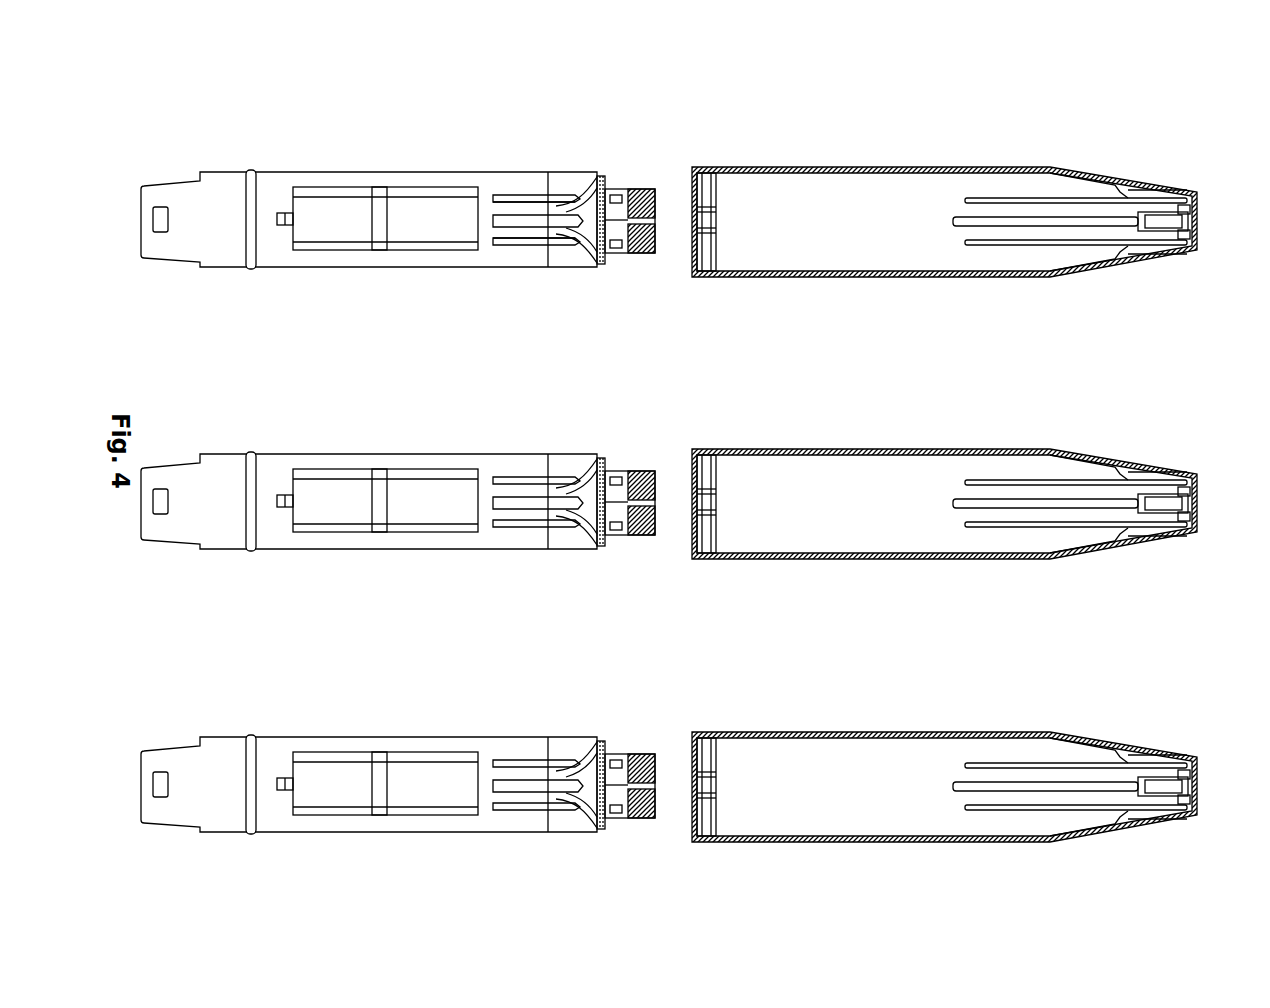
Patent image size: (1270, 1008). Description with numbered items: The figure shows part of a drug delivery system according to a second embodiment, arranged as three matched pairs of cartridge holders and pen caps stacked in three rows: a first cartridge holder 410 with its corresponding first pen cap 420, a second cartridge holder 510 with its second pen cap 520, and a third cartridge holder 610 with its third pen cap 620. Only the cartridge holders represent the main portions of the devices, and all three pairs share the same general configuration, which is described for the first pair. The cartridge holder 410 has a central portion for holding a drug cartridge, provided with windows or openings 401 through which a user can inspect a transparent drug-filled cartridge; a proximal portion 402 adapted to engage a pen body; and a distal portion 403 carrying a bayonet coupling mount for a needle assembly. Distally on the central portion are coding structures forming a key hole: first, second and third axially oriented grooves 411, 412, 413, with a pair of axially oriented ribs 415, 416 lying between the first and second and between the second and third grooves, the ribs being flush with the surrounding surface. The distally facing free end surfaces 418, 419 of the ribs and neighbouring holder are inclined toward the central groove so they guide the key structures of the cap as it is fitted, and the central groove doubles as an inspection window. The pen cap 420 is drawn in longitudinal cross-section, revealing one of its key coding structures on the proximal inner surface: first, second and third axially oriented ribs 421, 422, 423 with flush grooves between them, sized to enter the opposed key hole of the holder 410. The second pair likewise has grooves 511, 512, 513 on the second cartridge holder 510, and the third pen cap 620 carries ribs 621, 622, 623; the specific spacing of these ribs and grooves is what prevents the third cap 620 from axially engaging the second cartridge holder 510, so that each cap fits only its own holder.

The windows or openings 401 is at (310, 230).
The proximal portion 402 is at (163, 187).
The distal portion 403 is at (640, 190).
The first cartridge holder 410 is at (340, 172).
The first axially oriented groove 411 is at (520, 195).
The second axially oriented groove 412 is at (543, 220).
The third axially oriented groove 413 is at (520, 243).
The axially oriented rib 415 is at (505, 205).
The axially oriented rib 416 is at (505, 235).
The distally facing free end surface 418 is at (597, 178).
The distally facing free end surface 419 is at (598, 262).
The first pen cap 420 is at (898, 167).
The first axially oriented rib 421 is at (997, 197).
The second axially oriented rib 422 is at (988, 222).
The third axially oriented rib 423 is at (1080, 247).
The second cartridge holder 510 is at (320, 455).
The groove 511 is at (520, 483).
The groove 512 is at (538, 500).
The groove 513 is at (512, 522).
The second pen cap 520 is at (905, 449).
The third cartridge holder 610 is at (325, 737).
The third pen cap 620 is at (870, 732).
The rib 621 is at (985, 770).
The rib 622 is at (1025, 787).
The rib 623 is at (1082, 800).